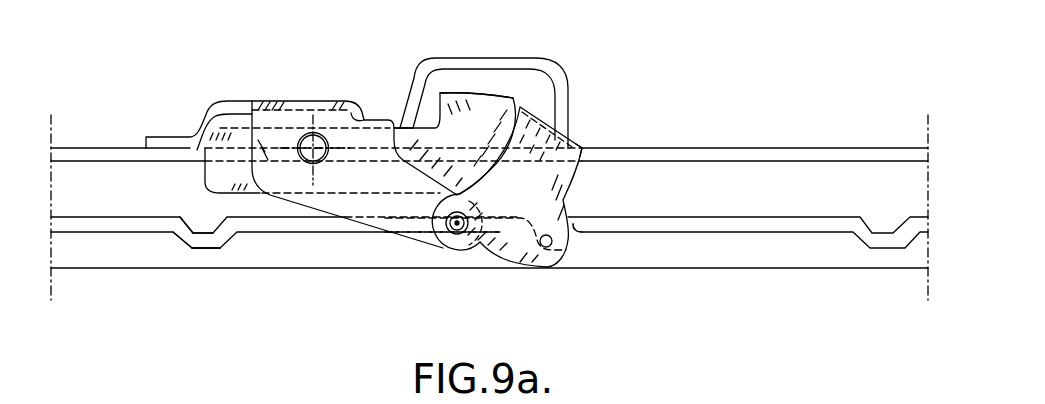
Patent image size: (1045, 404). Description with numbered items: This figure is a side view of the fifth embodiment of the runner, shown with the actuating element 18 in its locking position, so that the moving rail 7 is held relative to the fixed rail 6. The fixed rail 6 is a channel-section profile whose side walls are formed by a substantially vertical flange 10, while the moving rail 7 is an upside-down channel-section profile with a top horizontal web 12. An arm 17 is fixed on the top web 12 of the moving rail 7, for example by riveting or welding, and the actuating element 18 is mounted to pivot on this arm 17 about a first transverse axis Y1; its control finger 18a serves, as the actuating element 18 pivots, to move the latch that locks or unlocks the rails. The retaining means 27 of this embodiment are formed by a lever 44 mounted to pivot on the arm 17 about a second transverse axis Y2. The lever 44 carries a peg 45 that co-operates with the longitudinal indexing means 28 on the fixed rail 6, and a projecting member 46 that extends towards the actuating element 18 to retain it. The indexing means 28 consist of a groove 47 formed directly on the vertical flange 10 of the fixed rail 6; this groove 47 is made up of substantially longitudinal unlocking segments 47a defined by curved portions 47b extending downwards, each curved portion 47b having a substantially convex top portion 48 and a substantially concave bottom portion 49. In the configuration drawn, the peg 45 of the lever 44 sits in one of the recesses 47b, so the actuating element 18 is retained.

The fixed rail 6 is at (752, 242).
The moving rail 7 is at (738, 146).
The vertical flange 10 is at (318, 255).
The top horizontal web 12 is at (820, 147).
The arm 17 is at (282, 100).
The actuating element 18 is at (457, 128).
The control finger 18a is at (486, 94).
The retaining means 27 is at (585, 135).
The longitudinal indexing means 28 is at (686, 272).
The lever 44 is at (563, 200).
The peg 45 is at (548, 247).
The projecting member 46 is at (543, 133).
The groove 47 is at (628, 216).
The unlocking segments 47a is at (500, 228).
The curved portions 47b is at (196, 246).
The top portion 48 is at (205, 232).
The bottom portion 49 is at (209, 250).
The first transverse axis Y1 is at (313, 148).
The second transverse axis Y2 is at (452, 233).